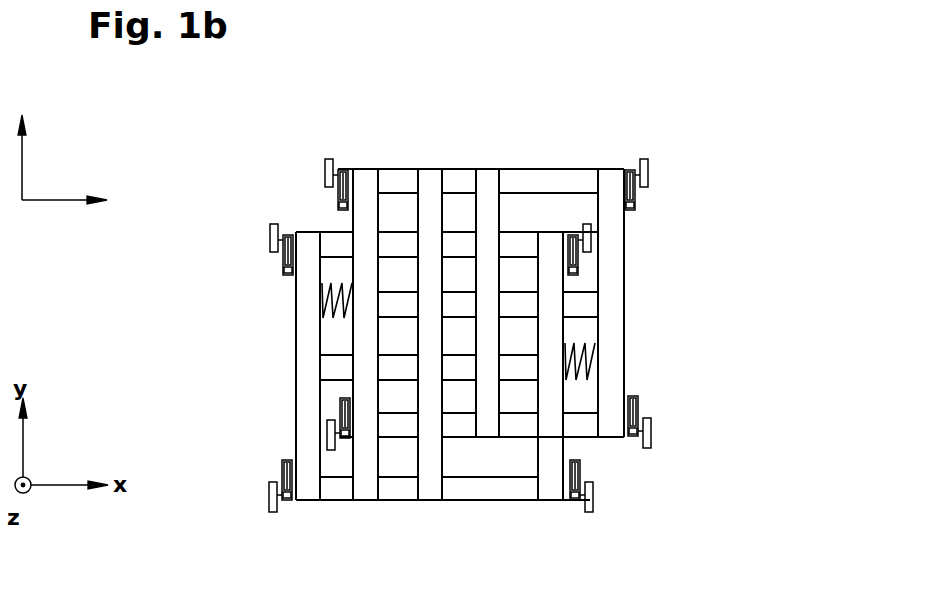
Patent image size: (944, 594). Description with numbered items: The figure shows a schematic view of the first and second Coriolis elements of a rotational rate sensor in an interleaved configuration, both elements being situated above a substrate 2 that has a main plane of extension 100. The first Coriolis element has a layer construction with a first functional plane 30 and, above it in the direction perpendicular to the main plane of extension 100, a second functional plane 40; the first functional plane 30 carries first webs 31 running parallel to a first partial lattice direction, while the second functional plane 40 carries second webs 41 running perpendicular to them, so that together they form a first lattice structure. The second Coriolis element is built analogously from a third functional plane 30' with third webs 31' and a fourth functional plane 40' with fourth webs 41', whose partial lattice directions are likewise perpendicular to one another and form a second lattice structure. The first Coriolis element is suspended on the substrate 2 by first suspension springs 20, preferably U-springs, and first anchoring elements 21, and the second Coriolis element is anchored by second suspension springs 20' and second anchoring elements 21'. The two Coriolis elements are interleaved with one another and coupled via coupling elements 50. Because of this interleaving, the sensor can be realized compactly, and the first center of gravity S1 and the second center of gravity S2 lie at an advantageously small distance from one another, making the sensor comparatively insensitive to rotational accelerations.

The main plane of extension 100 is at (62, 159).
The substrate 2 is at (143, 318).
The first functional plane 30 is at (385, 293).
The second functional plane 40 is at (422, 218).
The third functional plane 30' is at (469, 201).
The fourth functional plane 40' is at (508, 193).
The first webs 31 is at (395, 466).
The second webs 41 is at (426, 463).
The third webs 31' is at (472, 466).
The fourth webs 41' is at (518, 438).
The first suspension springs 20 is at (447, 367).
The first anchoring elements 21 is at (447, 378).
The second suspension springs 20' is at (491, 304).
The second anchoring elements 21' is at (489, 291).
The coupling elements 50 is at (325, 305).
The first center of gravity S1 is at (432, 303).
The second center of gravity S2 is at (490, 367).